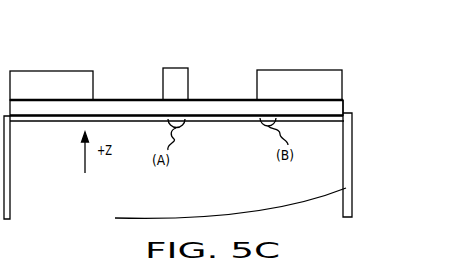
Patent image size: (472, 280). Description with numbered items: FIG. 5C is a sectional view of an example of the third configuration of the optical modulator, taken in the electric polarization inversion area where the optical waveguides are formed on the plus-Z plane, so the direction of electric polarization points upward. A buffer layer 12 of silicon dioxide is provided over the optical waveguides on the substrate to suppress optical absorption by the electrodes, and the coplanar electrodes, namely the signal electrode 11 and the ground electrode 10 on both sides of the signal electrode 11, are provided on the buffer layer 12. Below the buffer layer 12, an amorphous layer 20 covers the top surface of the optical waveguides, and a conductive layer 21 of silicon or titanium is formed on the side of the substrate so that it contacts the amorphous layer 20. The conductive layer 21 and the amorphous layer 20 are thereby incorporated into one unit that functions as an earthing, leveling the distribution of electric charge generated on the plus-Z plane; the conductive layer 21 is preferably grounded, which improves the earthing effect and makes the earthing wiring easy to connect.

The ground electrode 10 is at (213, 74).
The signal electrode 11 is at (173, 67).
The buffer layer 12 is at (195, 107).
The amorphous layer 20 is at (207, 118).
The conductive layer 21 is at (8, 170).